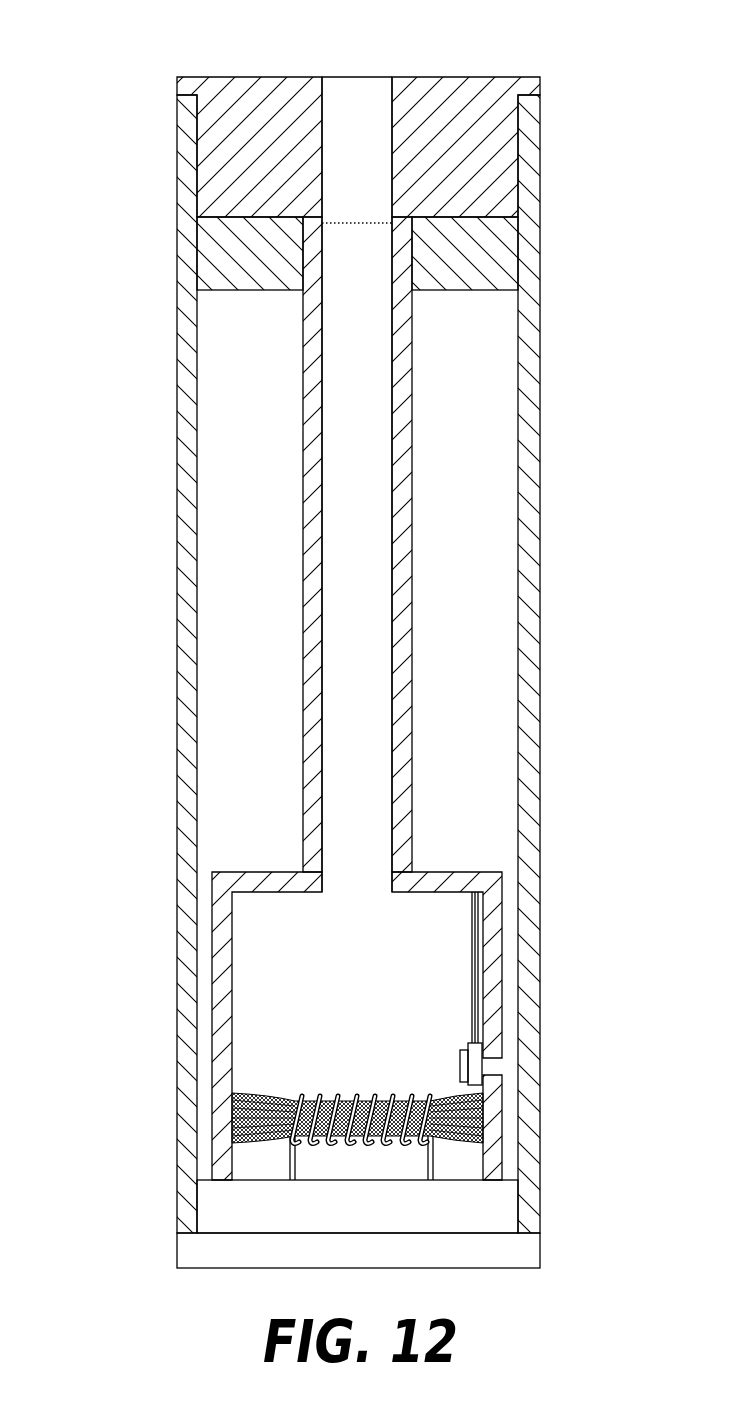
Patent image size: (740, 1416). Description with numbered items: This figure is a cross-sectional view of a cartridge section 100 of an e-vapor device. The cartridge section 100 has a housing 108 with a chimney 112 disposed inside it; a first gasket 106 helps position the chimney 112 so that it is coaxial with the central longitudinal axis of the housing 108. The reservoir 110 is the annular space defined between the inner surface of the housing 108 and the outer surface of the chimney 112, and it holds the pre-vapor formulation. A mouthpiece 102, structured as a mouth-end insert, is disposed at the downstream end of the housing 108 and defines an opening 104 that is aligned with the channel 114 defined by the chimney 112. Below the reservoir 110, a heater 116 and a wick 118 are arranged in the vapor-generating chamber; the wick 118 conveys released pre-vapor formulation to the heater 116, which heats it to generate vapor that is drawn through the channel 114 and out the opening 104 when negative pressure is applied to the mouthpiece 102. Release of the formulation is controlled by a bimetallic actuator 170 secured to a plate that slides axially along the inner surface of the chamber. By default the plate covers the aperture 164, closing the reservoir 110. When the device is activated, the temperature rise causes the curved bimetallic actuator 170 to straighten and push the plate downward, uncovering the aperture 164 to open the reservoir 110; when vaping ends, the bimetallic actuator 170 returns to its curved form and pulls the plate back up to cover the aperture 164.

The cartridge section 100 is at (91, 57).
The mouthpiece 102 is at (488, 92).
The opening 104 is at (355, 95).
The first gasket 106 is at (473, 253).
The housing 108 is at (527, 425).
The reservoir 110 is at (238, 497).
The chimney 112 is at (400, 642).
The channel 114 is at (343, 663).
The heater 116 is at (290, 1137).
The wick 118 is at (268, 1100).
The aperture 164 is at (497, 1065).
The bimetallic actuator 170 is at (463, 985).